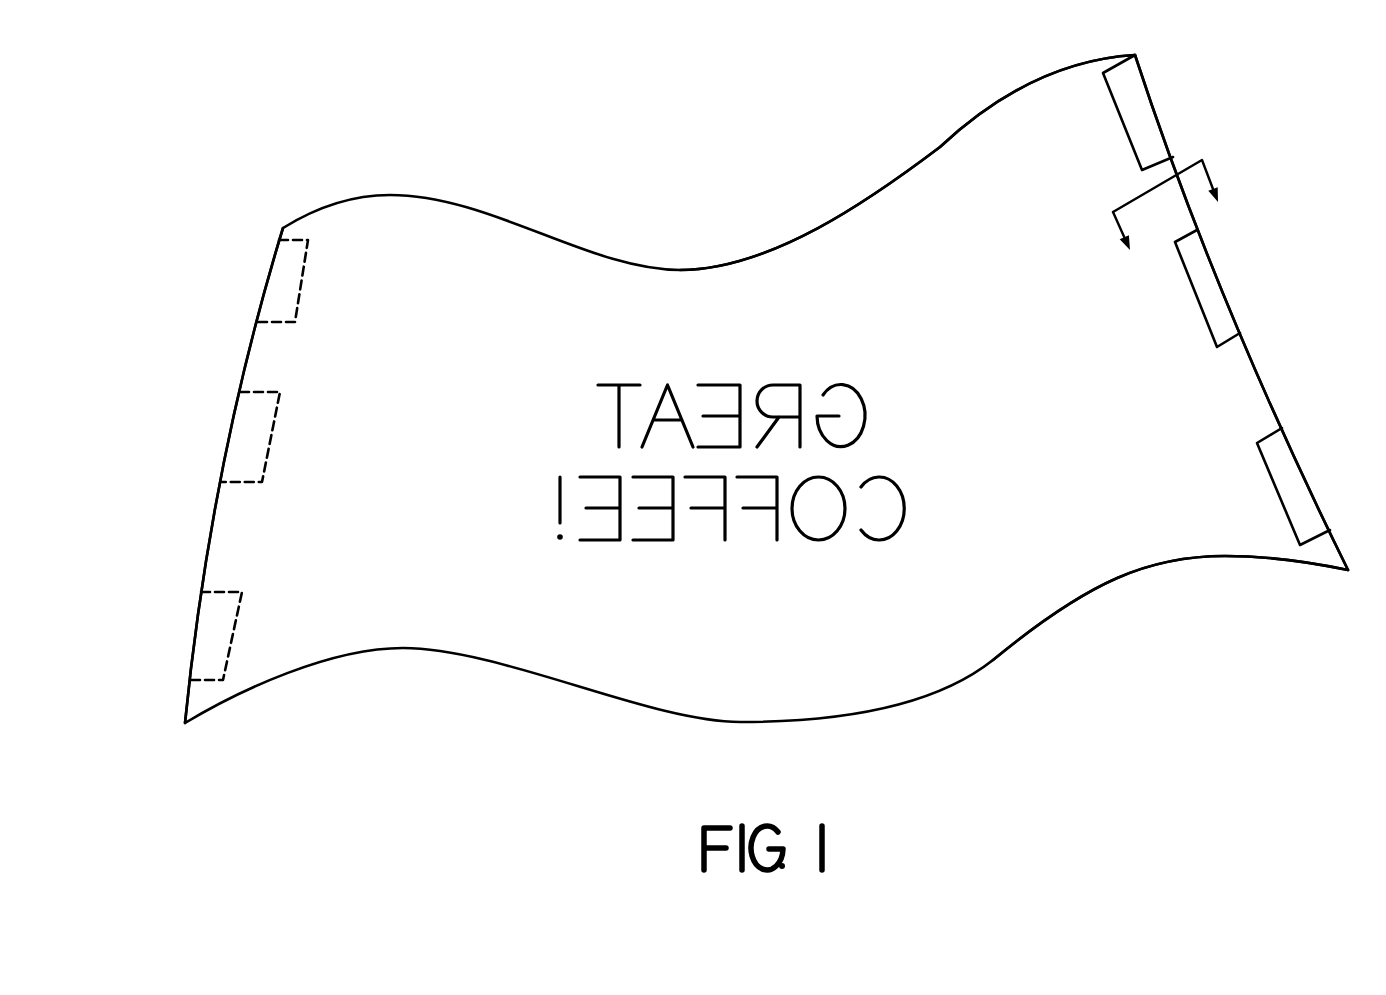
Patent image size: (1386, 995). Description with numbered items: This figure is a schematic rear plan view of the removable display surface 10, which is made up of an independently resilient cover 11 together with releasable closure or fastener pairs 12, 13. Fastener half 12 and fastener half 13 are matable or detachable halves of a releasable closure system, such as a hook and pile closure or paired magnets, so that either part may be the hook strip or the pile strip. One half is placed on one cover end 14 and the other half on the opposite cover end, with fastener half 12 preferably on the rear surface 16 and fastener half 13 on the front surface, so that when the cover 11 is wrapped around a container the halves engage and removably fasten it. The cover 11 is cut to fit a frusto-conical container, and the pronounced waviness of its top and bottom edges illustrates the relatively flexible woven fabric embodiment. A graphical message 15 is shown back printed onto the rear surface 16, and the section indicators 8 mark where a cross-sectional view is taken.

The section line 8- 8 is at (1178, 226).
The removable display surface 10 is at (577, 226).
The cover 11 is at (855, 212).
The fastener half 12 is at (1222, 283).
The fastener half 13 is at (300, 297).
The cover end 14 is at (250, 350).
The graphical message 15 is at (738, 560).
The rear surface 16 is at (1048, 542).